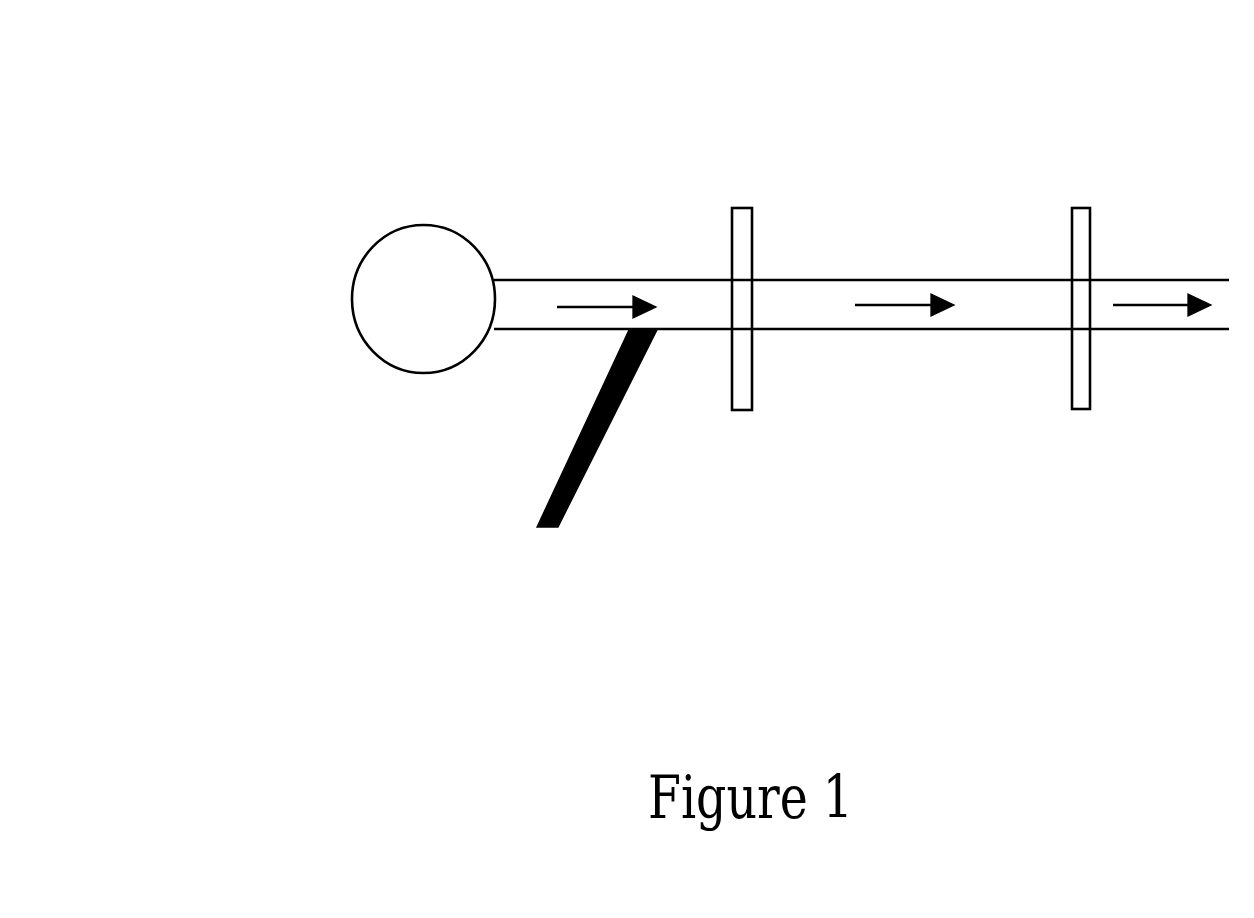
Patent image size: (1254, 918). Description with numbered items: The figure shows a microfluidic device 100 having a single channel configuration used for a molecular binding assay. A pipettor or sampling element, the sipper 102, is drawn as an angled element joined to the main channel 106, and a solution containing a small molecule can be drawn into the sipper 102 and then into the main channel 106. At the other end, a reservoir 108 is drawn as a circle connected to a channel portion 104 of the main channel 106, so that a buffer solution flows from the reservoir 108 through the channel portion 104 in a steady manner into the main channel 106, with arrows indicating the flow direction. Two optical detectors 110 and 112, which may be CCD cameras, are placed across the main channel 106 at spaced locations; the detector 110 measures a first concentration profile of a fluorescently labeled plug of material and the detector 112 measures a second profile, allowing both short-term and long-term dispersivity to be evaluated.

The microfluidic device 100 is at (330, 140).
The sipper 102 is at (568, 453).
The channel portion 104 is at (537, 280).
The main channel 106 is at (908, 280).
The reservoir 108 is at (353, 298).
The optical detector 110 is at (743, 427).
The optical detector 112 is at (1080, 427).